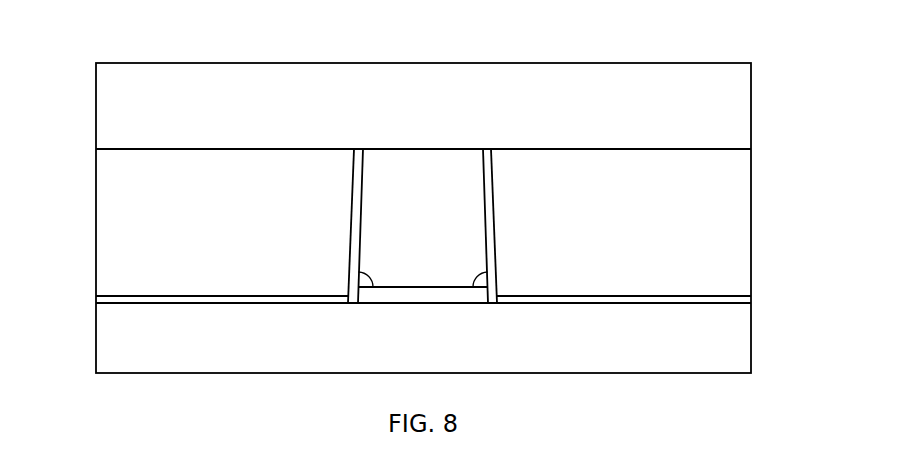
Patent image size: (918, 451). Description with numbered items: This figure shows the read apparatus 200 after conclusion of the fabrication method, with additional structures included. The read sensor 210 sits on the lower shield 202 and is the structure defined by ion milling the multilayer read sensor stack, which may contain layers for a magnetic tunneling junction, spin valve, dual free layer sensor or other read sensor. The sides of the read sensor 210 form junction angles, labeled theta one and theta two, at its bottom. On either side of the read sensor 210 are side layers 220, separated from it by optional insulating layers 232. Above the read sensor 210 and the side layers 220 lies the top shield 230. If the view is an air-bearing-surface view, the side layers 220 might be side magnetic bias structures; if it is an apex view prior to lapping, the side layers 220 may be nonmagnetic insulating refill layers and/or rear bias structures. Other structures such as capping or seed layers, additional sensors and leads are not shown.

The read apparatus 200 is at (402, 22).
The shield 202 is at (423, 323).
The read sensor 210 is at (423, 226).
The side layers 220 is at (423, 238).
The top shield 230 is at (423, 113).
The insulating layers 232 is at (96, 300).